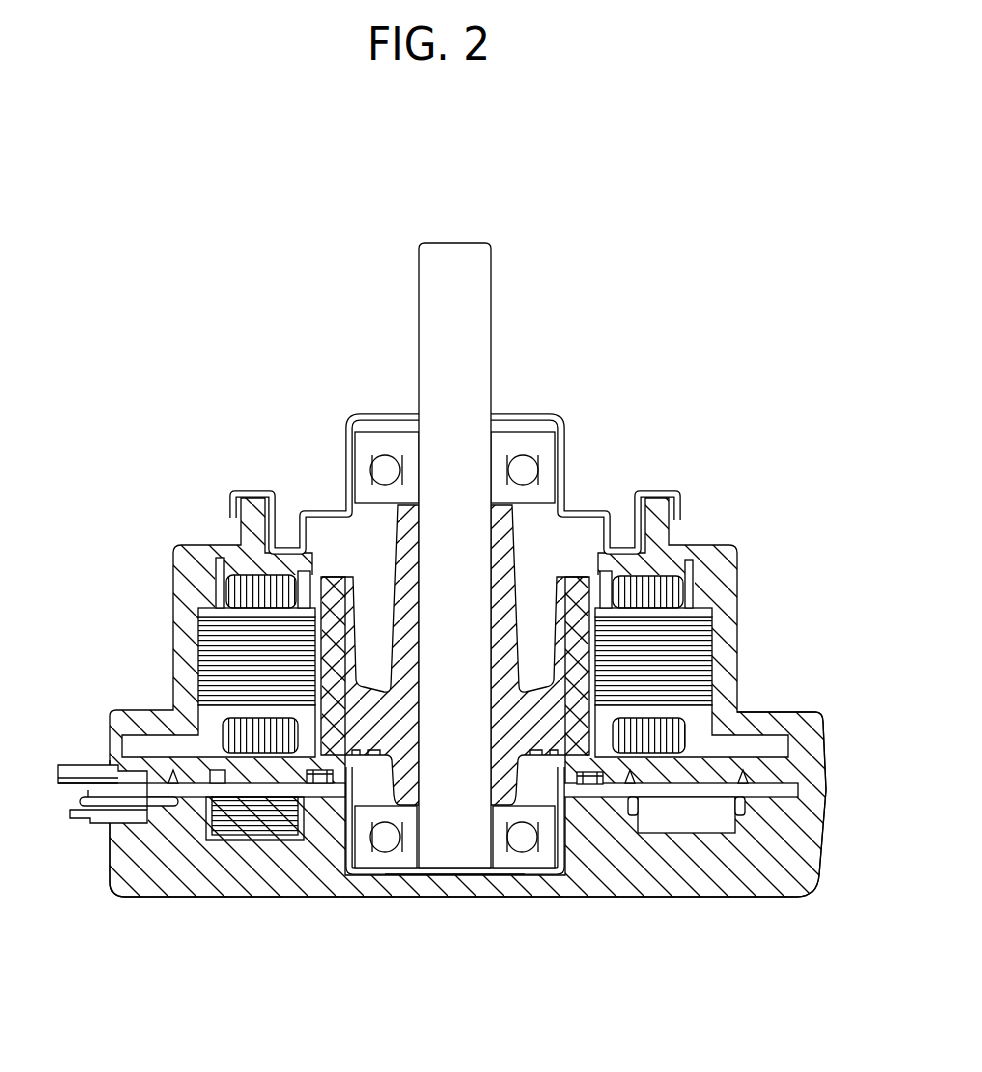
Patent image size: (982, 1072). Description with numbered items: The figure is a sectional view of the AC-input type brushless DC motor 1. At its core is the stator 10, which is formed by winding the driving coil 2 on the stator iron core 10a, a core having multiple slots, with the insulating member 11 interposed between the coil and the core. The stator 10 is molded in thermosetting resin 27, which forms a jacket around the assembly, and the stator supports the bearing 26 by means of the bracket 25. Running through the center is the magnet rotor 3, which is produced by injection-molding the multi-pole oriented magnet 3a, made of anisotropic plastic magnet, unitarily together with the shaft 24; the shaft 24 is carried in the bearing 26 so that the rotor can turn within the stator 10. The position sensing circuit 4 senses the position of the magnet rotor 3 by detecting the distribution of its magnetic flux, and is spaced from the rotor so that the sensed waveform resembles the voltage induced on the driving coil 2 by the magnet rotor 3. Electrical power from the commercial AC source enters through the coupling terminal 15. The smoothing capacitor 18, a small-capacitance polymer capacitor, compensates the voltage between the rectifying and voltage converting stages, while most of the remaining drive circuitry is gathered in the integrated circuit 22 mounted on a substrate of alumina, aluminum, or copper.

The AC-input type brushless DC motor 1 is at (193, 568).
The driving coil 2 is at (672, 590).
The magnet rotor 3 is at (455, 519).
The shaft 24 is at (461, 252).
The multi-pole oriented magnet 3a is at (577, 598).
The position sensing circuit 4 is at (598, 790).
The stator 10 is at (694, 678).
The stator iron core 10a is at (541, 659).
The insulating member 11 is at (690, 586).
The coupling terminal 15 is at (102, 800).
The smoothing capacitor 18 is at (257, 822).
The integrated circuit 22 is at (710, 822).
The bracket 25 is at (304, 512).
The bearing 26 is at (524, 468).
The thermosetting resin 27 is at (803, 880).